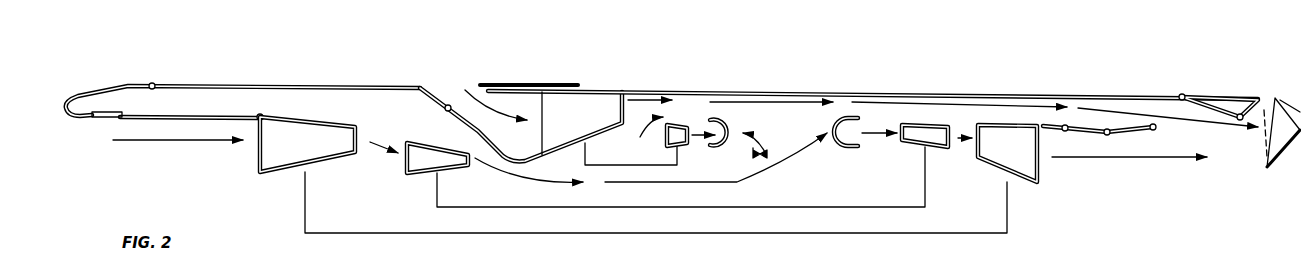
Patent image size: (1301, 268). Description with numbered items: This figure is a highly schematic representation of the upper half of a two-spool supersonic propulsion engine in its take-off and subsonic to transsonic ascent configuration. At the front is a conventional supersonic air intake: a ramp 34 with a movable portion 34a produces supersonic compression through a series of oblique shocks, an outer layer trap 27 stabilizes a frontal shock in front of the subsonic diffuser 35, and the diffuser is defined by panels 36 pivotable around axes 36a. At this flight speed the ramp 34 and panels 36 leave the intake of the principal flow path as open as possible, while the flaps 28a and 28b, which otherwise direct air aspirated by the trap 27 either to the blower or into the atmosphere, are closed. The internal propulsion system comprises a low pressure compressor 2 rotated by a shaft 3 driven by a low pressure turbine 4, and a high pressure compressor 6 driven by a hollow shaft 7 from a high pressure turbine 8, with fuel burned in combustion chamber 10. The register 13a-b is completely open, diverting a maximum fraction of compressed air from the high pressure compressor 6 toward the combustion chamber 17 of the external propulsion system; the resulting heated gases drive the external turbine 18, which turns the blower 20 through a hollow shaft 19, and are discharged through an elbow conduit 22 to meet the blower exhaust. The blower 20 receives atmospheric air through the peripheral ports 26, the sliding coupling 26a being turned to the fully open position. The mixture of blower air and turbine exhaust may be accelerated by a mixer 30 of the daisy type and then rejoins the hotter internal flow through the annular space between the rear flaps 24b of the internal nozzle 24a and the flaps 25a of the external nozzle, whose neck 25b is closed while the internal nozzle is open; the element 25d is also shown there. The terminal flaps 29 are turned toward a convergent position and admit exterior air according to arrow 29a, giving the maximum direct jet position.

The low pressure compressor 2 is at (287, 153).
The shaft 3 is at (425, 233).
The low pressure turbine 4 is at (1000, 153).
The high pressure compressor 6 is at (420, 165).
The hollow shaft 7 is at (448, 207).
The high pressure turbine 8 is at (918, 139).
The combustion chamber 10 is at (845, 147).
The register 13a-b is at (762, 148).
The combustion chamber 17 is at (716, 146).
The external turbine 18 is at (678, 125).
The hollow shaft 19 is at (631, 153).
The blower 20 is at (593, 107).
The elbow conduit 22 is at (655, 137).
The internal nozzle 24a is at (1088, 134).
The flaps of internal nozzle 24b is at (1138, 134).
The flaps of external nozzle 25a is at (1137, 95).
The external nozzle neck 25b is at (1240, 114).
The deflection roller 25d is at (1220, 107).
The peripheral ports 26 is at (452, 93).
The sliding coupling 26a is at (538, 83).
The outer layer trap 27 is at (105, 117).
The flaps 28a is at (125, 85).
The flaps 28b is at (450, 115).
The terminal flaps 29 is at (1288, 155).
The arrow 29a is at (1267, 106).
The mixer 30 is at (708, 112).
The ramp 34 is at (88, 114).
The movable portion 34a is at (71, 116).
The subsonic diffuser 35 is at (202, 147).
The panels 36 is at (192, 117).
The axes 36a is at (259, 114).